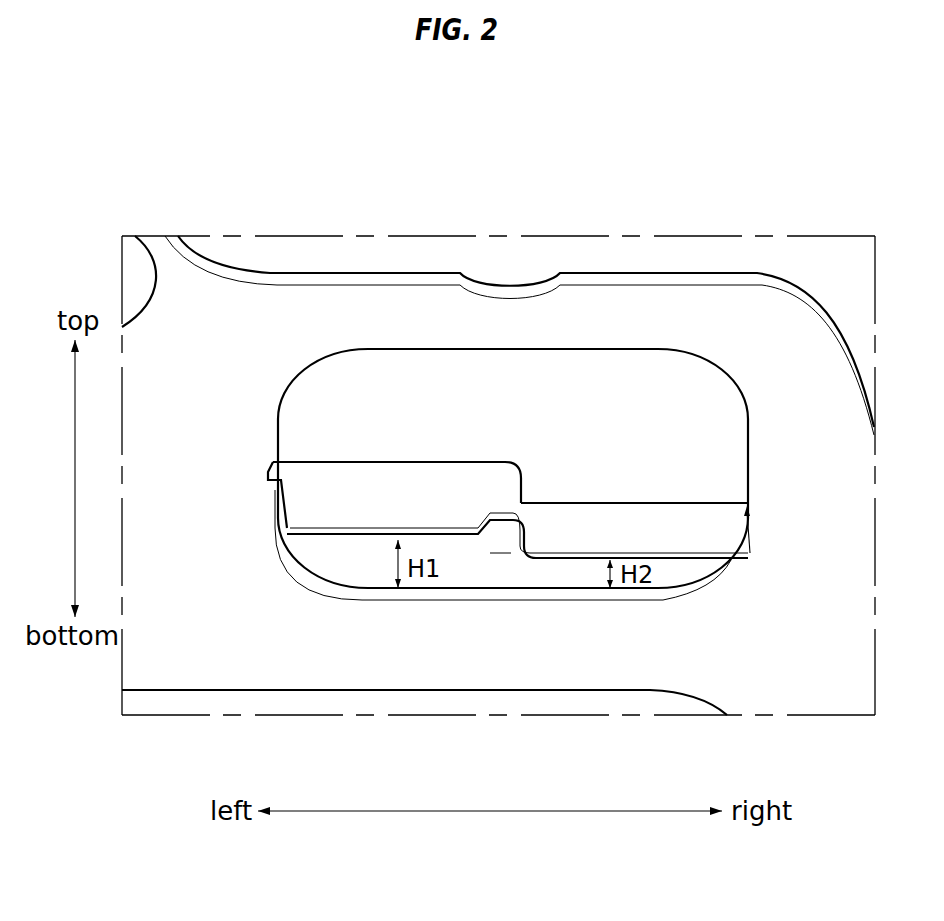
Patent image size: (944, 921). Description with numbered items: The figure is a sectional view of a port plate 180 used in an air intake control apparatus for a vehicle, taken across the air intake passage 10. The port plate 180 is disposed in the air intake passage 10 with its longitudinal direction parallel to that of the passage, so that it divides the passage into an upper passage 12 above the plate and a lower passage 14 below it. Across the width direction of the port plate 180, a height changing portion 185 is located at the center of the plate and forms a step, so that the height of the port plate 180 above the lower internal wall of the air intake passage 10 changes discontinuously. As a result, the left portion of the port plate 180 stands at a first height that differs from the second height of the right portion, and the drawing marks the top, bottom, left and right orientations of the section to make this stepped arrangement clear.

The air intake passage 10 is at (638, 349).
The upper passage 12 is at (487, 403).
The lower passage 14 is at (498, 556).
The port plate 180 is at (369, 457).
The height changing portion 185 is at (527, 487).